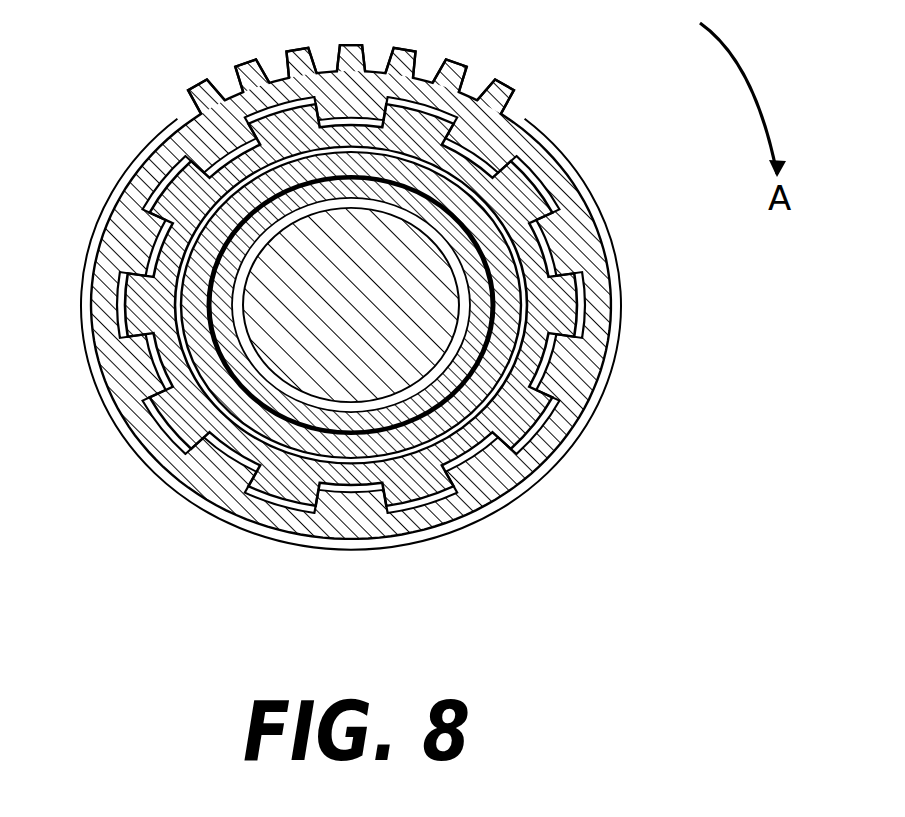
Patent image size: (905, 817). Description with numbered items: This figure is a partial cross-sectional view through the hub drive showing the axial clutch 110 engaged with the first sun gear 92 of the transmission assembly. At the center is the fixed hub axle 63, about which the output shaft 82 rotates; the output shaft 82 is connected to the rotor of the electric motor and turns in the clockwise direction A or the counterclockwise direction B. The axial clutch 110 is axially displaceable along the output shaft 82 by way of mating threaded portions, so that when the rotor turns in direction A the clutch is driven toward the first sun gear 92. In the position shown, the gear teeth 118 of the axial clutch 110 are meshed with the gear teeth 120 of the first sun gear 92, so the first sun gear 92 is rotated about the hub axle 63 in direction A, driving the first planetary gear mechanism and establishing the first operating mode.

The fixed hub axle 63 is at (447, 315).
The output shaft 82 is at (480, 403).
The first sun gear 92 is at (467, 74).
The axial clutch 110 is at (522, 194).
The gear teeth 118 is at (152, 163).
The gear teeth 120 is at (475, 147).